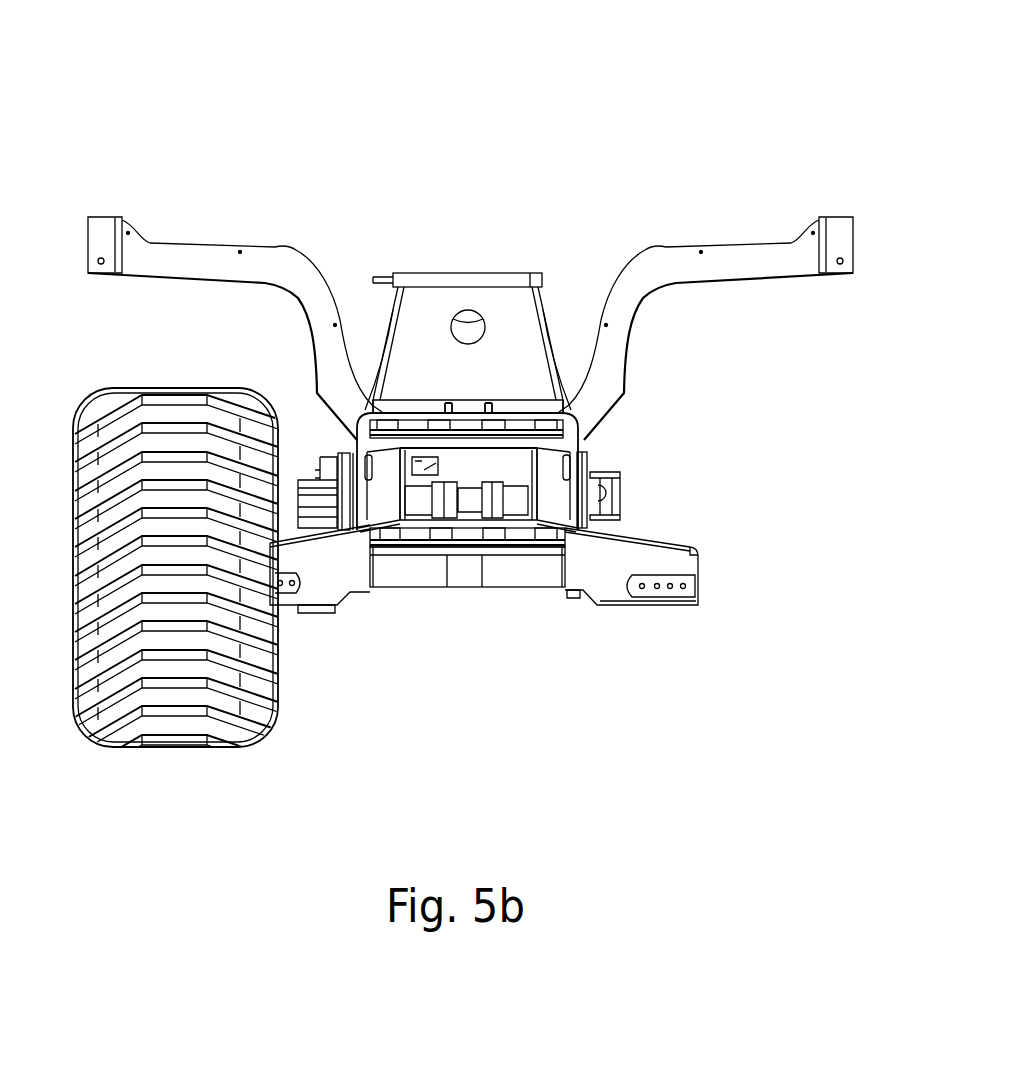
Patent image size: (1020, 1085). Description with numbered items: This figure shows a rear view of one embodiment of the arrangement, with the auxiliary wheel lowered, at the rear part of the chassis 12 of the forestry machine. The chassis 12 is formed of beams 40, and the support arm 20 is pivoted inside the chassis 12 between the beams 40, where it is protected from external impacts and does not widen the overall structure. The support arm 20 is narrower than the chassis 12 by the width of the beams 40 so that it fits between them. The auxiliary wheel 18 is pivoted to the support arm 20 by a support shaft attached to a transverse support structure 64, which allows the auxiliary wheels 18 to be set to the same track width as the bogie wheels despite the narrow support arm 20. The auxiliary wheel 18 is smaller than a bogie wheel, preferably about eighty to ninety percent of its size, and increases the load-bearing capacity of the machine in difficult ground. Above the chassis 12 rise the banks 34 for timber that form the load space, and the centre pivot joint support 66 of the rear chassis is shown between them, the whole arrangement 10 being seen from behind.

The vehicle 10 is at (570, 118).
The frame 12 is at (610, 458).
The wheel 18 is at (220, 692).
The engine housing 20 is at (417, 570).
The arm 34 is at (745, 265).
The bracket 40 is at (590, 513).
The axle beam 64 is at (615, 590).
The hopper 66 is at (410, 325).